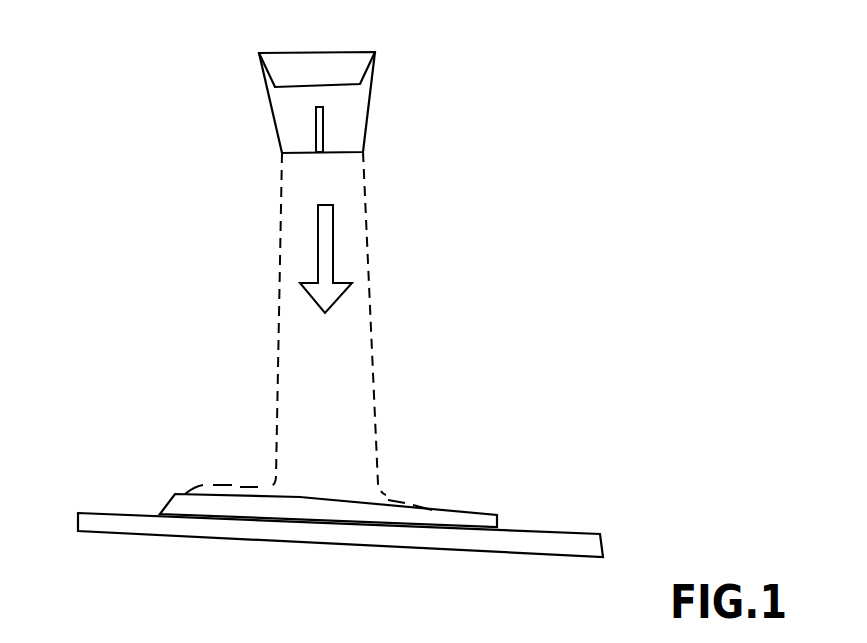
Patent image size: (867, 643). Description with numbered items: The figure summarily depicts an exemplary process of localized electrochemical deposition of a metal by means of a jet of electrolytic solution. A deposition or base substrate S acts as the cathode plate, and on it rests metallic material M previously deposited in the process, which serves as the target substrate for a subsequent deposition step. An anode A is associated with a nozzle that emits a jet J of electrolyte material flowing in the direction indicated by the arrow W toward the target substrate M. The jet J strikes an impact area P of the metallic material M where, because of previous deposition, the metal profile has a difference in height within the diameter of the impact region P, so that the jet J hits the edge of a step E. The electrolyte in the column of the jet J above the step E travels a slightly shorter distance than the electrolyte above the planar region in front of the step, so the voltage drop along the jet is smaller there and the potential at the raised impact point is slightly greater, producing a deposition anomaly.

The deposition substrate S is at (568, 537).
The metallic material M is at (158, 505).
The jet J is at (275, 179).
The anode A is at (331, 130).
The arrow W is at (342, 256).
The step E is at (320, 495).
The impact area P is at (410, 490).